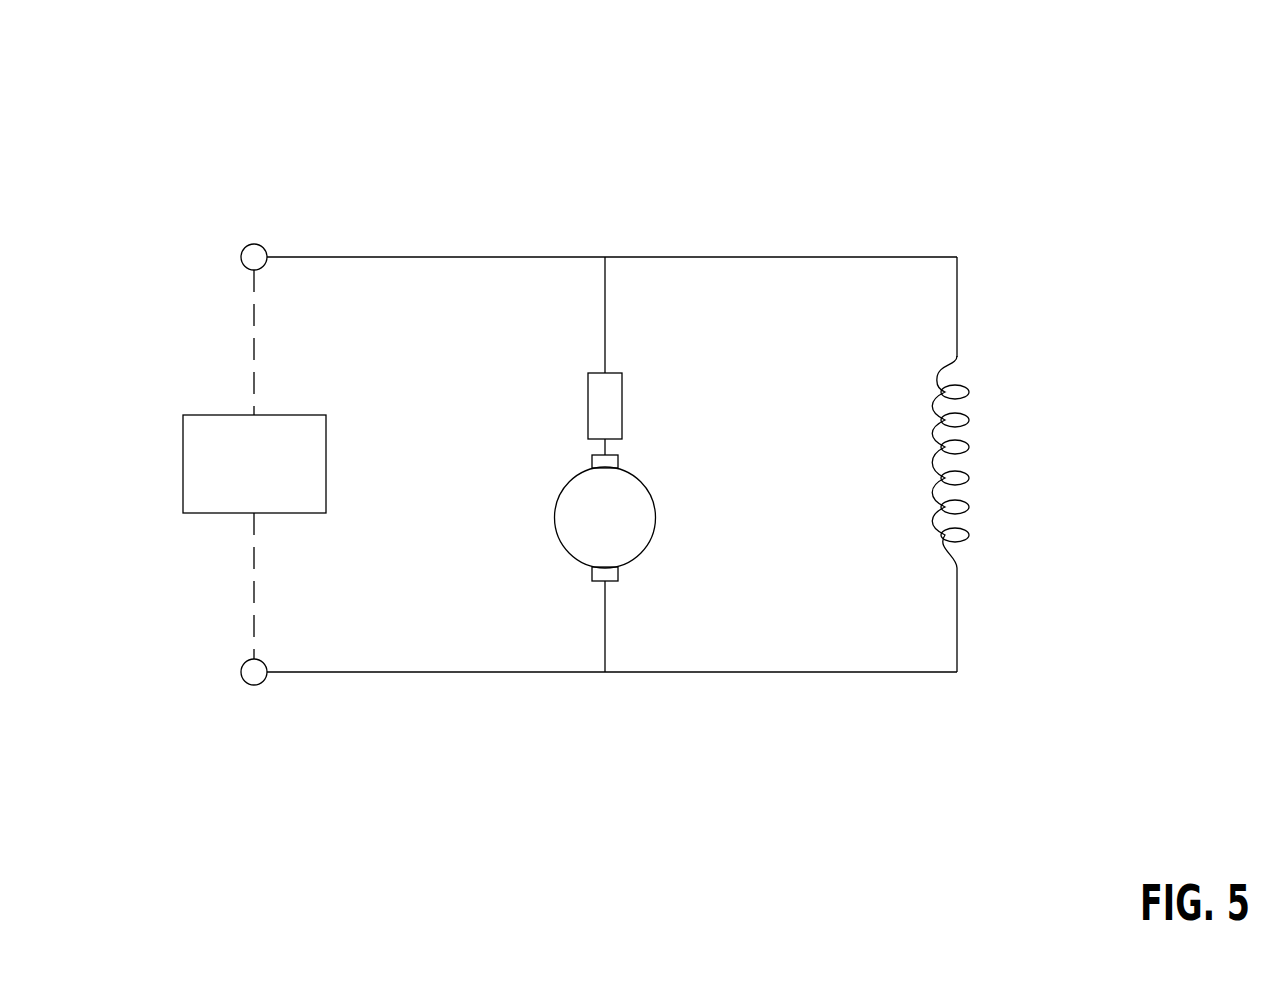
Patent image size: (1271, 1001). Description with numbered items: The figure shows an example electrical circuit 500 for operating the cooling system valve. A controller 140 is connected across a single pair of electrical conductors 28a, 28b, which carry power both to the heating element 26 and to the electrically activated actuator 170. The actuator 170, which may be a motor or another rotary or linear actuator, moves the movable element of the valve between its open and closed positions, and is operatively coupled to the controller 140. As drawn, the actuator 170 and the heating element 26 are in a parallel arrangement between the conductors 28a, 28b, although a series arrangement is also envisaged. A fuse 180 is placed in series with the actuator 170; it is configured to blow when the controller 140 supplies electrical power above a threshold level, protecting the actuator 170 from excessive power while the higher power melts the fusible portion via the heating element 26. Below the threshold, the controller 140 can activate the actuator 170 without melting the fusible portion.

The electrical circuit 500 is at (1038, 342).
The electrical conductor 28a is at (397, 257).
The electrical conductor 28b is at (403, 672).
The controller 140 is at (205, 462).
The fuse 180 is at (588, 400).
The electrically activated actuator 170 is at (652, 512).
The heating element 26 is at (958, 442).